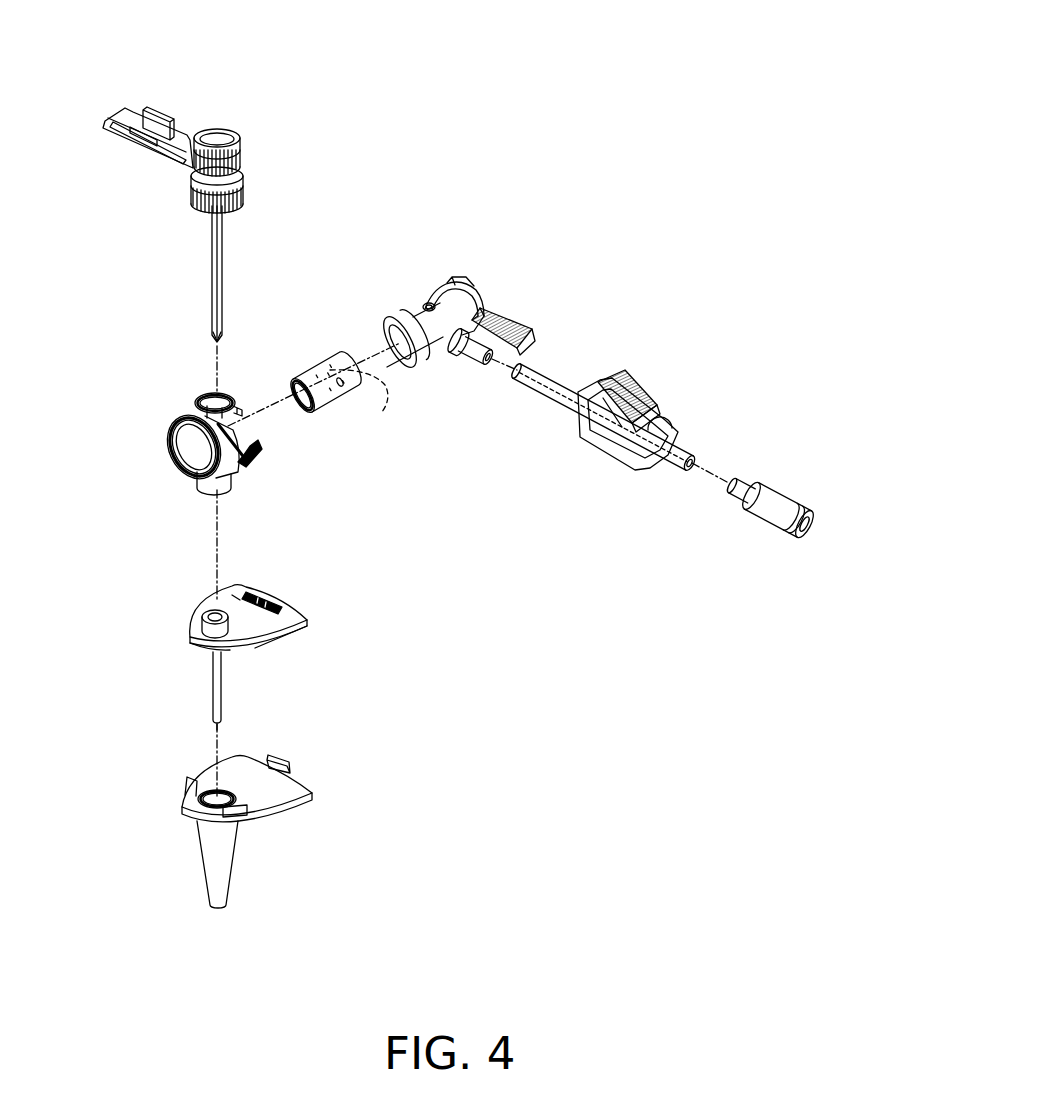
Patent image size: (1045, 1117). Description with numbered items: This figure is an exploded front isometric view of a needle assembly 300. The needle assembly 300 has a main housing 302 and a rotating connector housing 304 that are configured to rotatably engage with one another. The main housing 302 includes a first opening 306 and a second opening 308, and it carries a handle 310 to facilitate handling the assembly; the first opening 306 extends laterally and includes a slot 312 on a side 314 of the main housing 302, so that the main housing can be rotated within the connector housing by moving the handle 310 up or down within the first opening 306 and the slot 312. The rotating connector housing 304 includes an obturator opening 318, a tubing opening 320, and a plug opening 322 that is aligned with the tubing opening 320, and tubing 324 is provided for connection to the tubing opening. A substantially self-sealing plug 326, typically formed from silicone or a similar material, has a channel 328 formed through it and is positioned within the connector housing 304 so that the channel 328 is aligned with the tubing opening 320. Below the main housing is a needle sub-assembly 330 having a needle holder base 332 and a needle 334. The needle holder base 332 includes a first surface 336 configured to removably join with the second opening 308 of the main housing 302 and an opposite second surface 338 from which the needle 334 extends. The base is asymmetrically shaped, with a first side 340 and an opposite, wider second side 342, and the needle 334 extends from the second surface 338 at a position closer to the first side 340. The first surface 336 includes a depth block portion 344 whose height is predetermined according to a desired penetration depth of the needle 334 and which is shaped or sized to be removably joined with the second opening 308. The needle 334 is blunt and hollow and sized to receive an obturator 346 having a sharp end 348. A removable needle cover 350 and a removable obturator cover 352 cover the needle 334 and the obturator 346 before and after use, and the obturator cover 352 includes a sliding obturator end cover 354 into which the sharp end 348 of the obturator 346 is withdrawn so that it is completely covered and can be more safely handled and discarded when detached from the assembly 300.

The needle assembly 300 is at (620, 68).
The main housing 302 is at (182, 426).
The rotating connector housing 304 is at (483, 297).
The first opening 306 is at (205, 396).
The second opening 308 is at (210, 494).
The handle 310 is at (533, 348).
The slot 312 is at (240, 466).
The side 314 is at (188, 456).
The obturator opening 318 is at (429, 303).
The tubing opening 320 is at (488, 362).
The plug opening 322 is at (412, 308).
The tubing 324 is at (680, 454).
The self-sealing plug 326 is at (326, 418).
The channel 328 is at (369, 411).
The needle sub-assembly 330 is at (141, 730).
The needle holder base 332 is at (306, 624).
The needle 334 is at (224, 706).
The first surface 336 is at (232, 600).
The second surface 338 is at (258, 654).
The first side 340 is at (192, 648).
The second side 342 is at (278, 602).
The depth block portion 344 is at (204, 626).
The obturator 346 is at (222, 272).
The sharp end 348 is at (218, 348).
The needle cover 350 is at (305, 806).
The obturator cover 352 is at (190, 165).
The sliding obturator end cover 354 is at (245, 183).